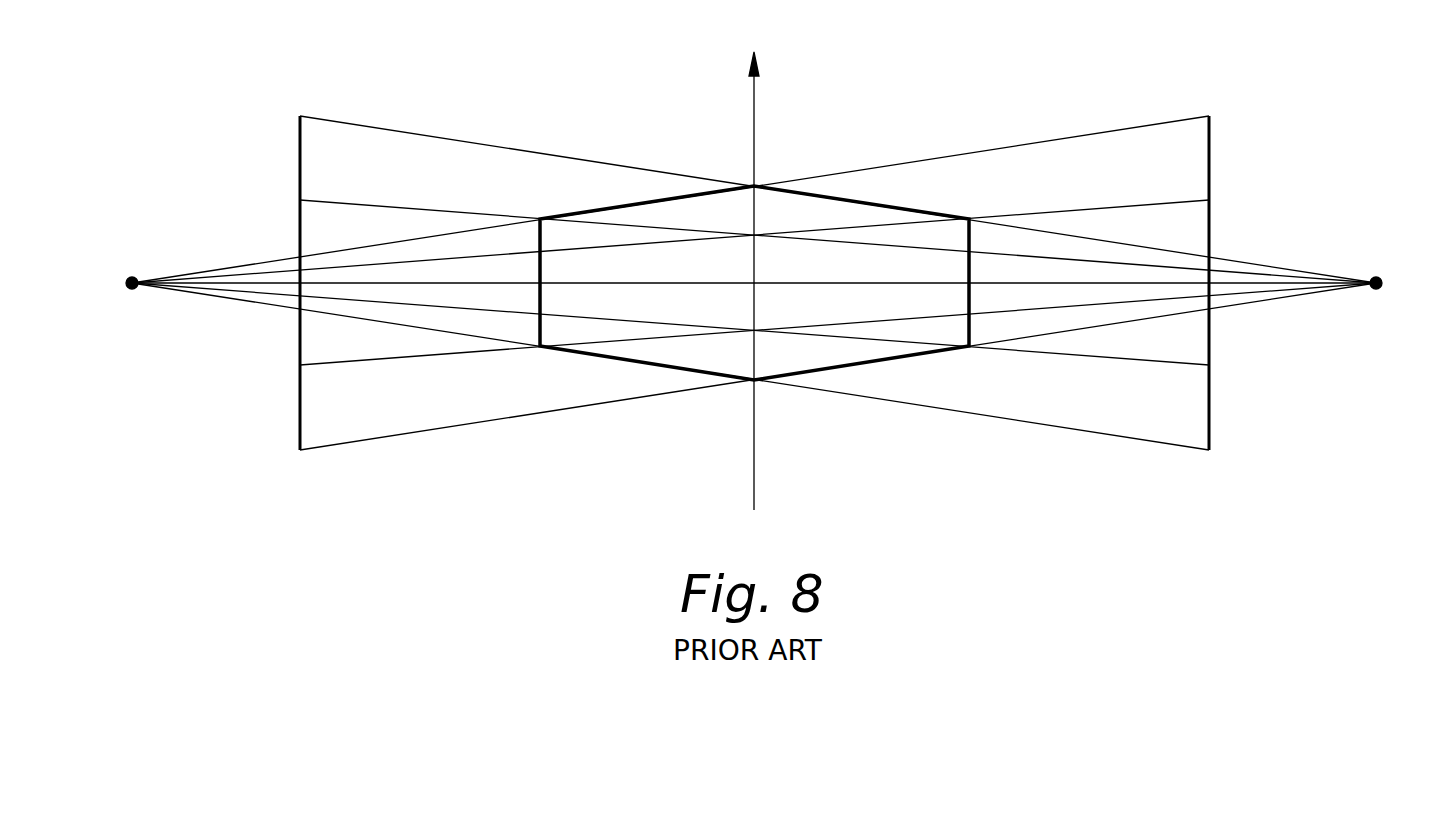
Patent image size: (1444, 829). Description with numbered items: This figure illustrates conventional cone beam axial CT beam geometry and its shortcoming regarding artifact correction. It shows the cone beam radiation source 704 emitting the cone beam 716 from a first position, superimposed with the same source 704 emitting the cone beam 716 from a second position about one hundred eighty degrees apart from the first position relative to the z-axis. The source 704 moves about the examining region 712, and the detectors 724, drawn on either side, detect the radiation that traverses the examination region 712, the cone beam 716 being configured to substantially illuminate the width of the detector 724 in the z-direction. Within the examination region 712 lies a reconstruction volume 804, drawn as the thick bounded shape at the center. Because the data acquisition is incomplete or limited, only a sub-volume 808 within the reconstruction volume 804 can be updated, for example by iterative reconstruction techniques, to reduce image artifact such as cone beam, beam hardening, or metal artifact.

The cone beam radiation source 704 is at (130, 290).
The examining region 712 is at (835, 143).
The cone beam 716 is at (243, 268).
The detectors 724 is at (300, 167).
The reconstruction volume 804 is at (640, 202).
The sub-volume 808 is at (909, 247).